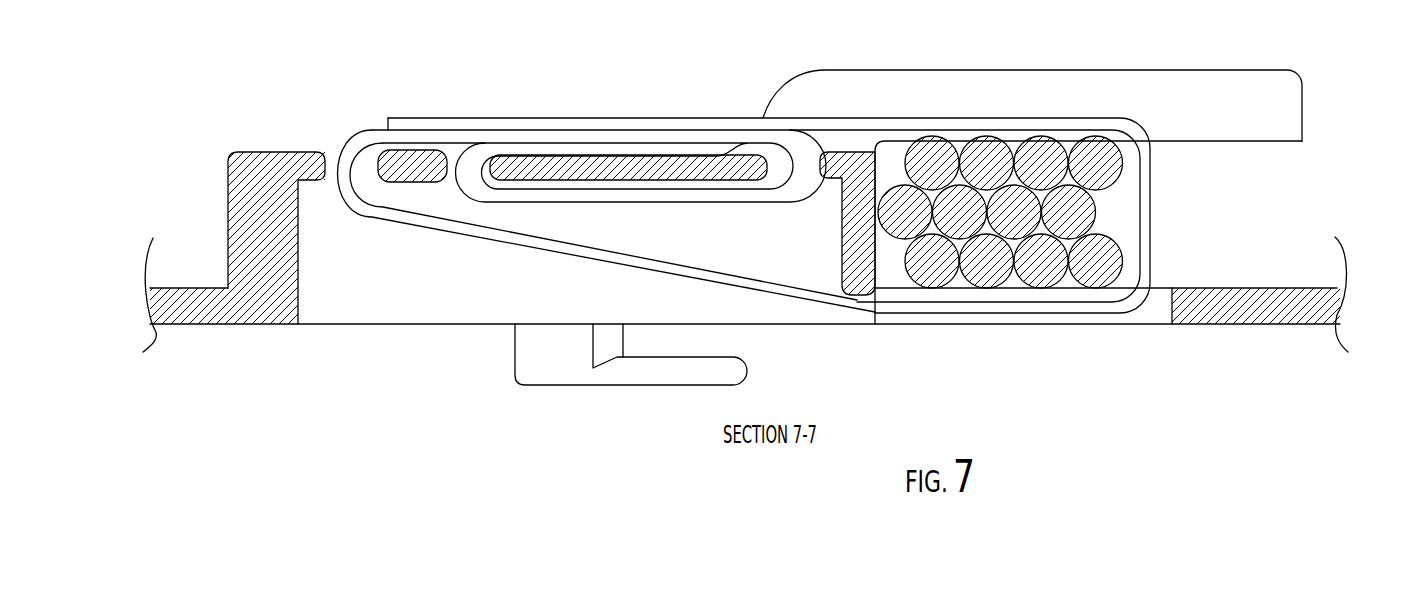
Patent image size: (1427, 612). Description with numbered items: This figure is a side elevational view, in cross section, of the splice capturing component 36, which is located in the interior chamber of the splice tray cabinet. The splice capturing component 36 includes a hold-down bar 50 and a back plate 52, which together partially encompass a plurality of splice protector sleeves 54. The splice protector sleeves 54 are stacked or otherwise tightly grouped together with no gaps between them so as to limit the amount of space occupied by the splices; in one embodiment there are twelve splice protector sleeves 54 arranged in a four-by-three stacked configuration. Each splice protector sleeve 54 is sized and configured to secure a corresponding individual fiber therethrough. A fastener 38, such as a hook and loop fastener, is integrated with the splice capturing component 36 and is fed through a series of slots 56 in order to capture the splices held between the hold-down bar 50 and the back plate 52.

The splice capturing component 36 is at (1330, 133).
The fastener 38 is at (684, 118).
The hold-down bar 50 is at (1143, 70).
The back plate 52 is at (878, 250).
The splice protector sleeves 54 is at (1102, 224).
The slots 56 is at (325, 168).